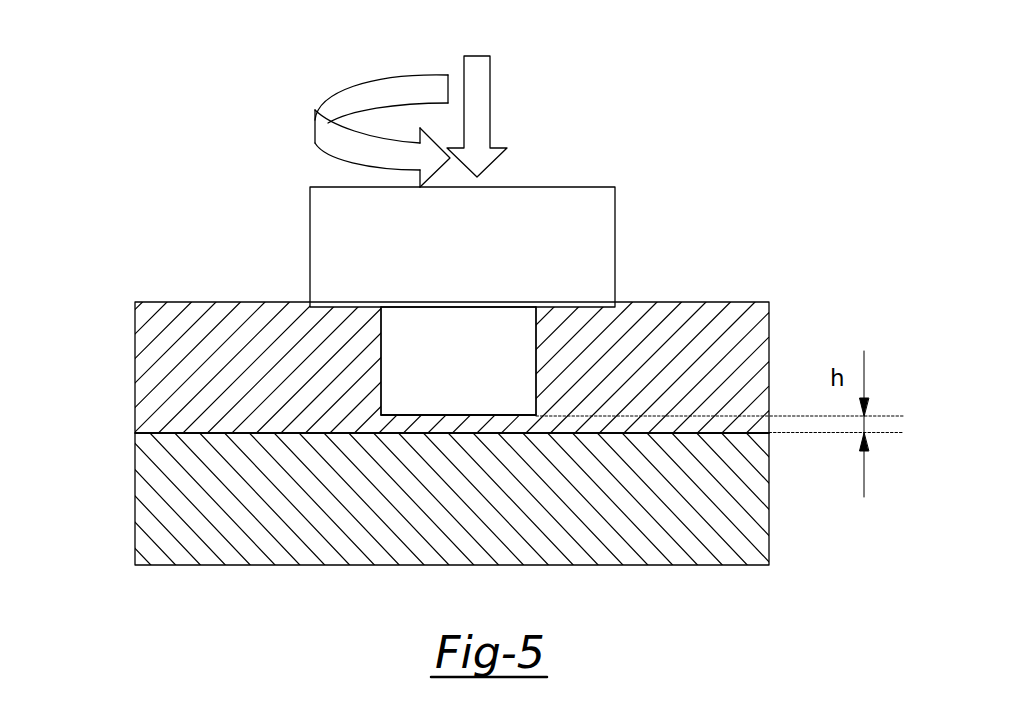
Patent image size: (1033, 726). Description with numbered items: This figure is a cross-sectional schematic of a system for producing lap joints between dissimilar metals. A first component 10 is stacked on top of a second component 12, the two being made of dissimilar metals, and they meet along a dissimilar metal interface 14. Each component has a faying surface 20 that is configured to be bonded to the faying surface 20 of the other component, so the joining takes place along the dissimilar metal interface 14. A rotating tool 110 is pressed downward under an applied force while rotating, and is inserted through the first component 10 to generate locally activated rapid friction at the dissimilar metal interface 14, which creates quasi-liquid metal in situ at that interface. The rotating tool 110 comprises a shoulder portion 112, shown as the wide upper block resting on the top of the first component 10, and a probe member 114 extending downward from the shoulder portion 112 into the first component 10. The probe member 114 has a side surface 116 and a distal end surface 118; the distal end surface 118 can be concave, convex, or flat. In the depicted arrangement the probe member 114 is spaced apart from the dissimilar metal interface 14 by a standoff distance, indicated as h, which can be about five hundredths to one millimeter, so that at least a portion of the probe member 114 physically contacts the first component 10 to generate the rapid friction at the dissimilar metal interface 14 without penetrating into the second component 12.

The first component 10 is at (135, 345).
The second component 12 is at (135, 493).
The dissimilar metal interface 14 is at (135, 433).
The faying surface 20 is at (746, 433).
The rotating tool 110 is at (532, 235).
The shoulder portion 112 is at (615, 230).
The probe member 114 is at (536, 365).
The side surface 116 is at (382, 357).
The distal end surface 118 is at (452, 415).